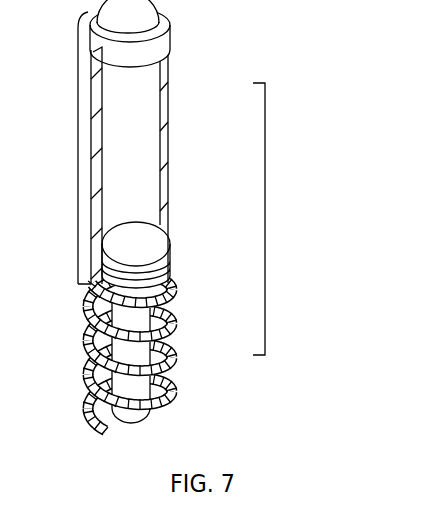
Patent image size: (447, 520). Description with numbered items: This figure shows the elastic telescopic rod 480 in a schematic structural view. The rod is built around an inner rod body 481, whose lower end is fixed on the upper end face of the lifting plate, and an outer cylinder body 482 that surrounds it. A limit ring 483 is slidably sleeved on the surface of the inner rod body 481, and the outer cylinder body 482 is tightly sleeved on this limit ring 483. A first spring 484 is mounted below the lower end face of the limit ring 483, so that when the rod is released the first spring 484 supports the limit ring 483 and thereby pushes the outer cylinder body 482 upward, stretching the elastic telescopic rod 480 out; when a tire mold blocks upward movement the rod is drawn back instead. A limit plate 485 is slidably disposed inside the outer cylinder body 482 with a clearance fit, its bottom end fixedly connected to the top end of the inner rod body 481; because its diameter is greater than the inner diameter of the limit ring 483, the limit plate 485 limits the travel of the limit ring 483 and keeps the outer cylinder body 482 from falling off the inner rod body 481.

The elastic telescopic rod 480 is at (290, 219).
The inner rod body 481 is at (128, 382).
The outer cylinder body 482 is at (155, 110).
The limit ring 483 is at (222, 270).
The first spring 484 is at (222, 317).
The limit plate 485 is at (155, 237).